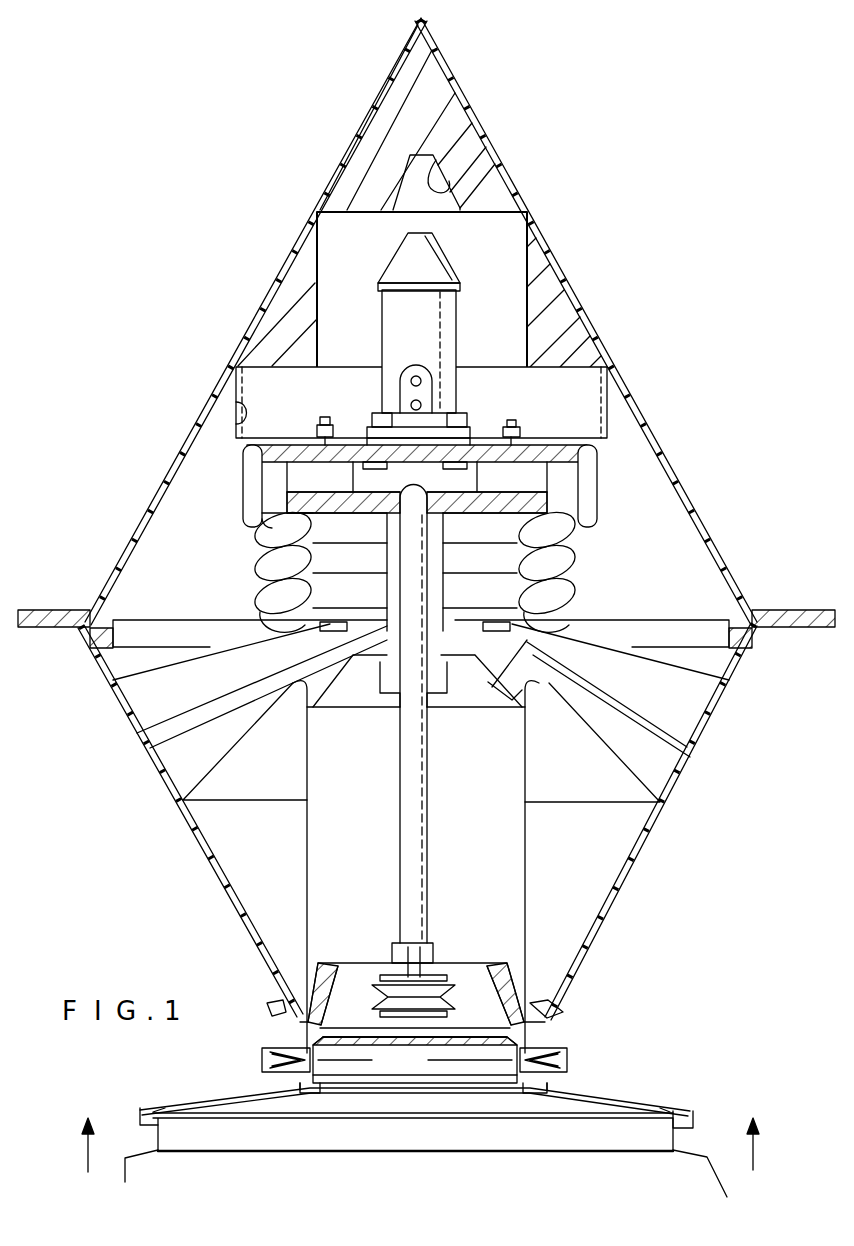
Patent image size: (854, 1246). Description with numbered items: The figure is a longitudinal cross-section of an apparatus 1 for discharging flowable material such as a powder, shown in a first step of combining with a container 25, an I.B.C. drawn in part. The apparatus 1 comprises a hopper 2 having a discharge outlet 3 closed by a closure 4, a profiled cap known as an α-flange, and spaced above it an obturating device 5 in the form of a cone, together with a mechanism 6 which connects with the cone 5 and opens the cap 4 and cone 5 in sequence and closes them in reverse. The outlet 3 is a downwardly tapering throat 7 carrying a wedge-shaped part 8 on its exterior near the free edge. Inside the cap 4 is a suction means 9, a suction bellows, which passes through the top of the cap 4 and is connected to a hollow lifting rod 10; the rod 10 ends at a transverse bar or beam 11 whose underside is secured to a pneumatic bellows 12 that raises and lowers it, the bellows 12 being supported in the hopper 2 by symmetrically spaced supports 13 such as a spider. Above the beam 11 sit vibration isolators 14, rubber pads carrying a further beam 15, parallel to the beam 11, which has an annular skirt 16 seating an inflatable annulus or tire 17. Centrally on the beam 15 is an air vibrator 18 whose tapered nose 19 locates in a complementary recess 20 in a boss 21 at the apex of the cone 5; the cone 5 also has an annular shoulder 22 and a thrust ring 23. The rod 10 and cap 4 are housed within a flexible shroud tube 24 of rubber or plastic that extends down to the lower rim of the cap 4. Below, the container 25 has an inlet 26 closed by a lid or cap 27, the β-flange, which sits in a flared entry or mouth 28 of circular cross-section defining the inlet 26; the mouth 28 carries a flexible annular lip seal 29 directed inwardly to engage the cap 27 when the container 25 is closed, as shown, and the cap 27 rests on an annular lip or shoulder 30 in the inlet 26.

The apparatus 1 is at (650, 172).
The hopper 2 is at (671, 318).
The discharge outlet 3 is at (543, 965).
The closure 4 is at (462, 963).
The obturating device 5 is at (652, 446).
The mechanism 6 is at (270, 780).
The tapering throat 7 is at (642, 838).
The wedge-shaped part 8 is at (562, 1010).
The suction means 9 is at (405, 1000).
The lifting rod 10 is at (412, 795).
The transverse bar or beam 11 is at (450, 520).
The pneumatic bellows 12 is at (570, 578).
The supports 13 is at (700, 690).
The vibration isolators 14 is at (305, 465).
The further beam 15 is at (485, 430).
The annular skirt 16 is at (268, 512).
The inflatable annulus or tire 17 is at (250, 482).
The air vibrator 18 is at (420, 326).
The tapered nose 19 is at (428, 262).
The recess 20 is at (440, 155).
The boss 21 is at (500, 183).
The annular shoulder 22 is at (290, 370).
The thrust ring 23 is at (240, 425).
The flexible shroud tube 24 is at (522, 807).
The container 25 is at (722, 1138).
The inlet 26 is at (383, 1095).
The lid or cap 27 is at (418, 1073).
The flared entry or mouth 28 is at (545, 1095).
The lip seal 29 is at (560, 1049).
The annular lip or shoulder 30 is at (317, 1083).